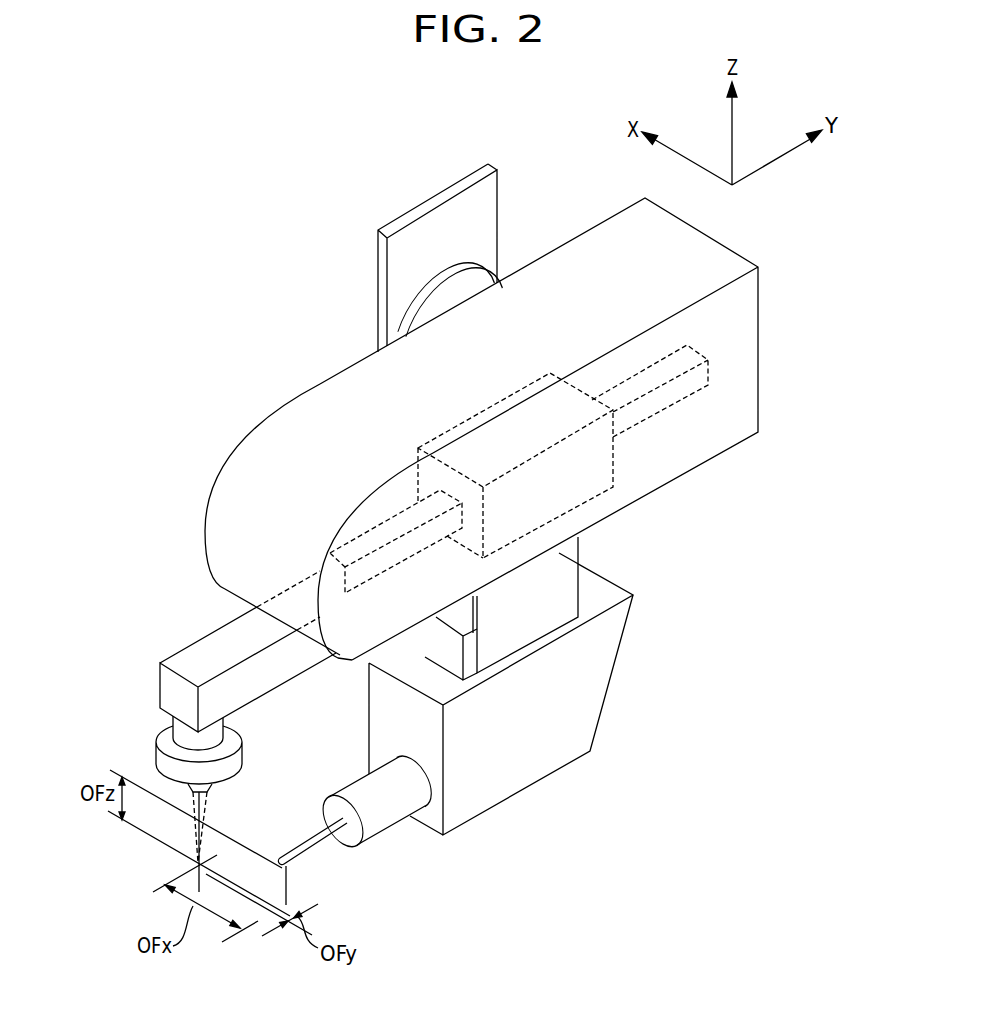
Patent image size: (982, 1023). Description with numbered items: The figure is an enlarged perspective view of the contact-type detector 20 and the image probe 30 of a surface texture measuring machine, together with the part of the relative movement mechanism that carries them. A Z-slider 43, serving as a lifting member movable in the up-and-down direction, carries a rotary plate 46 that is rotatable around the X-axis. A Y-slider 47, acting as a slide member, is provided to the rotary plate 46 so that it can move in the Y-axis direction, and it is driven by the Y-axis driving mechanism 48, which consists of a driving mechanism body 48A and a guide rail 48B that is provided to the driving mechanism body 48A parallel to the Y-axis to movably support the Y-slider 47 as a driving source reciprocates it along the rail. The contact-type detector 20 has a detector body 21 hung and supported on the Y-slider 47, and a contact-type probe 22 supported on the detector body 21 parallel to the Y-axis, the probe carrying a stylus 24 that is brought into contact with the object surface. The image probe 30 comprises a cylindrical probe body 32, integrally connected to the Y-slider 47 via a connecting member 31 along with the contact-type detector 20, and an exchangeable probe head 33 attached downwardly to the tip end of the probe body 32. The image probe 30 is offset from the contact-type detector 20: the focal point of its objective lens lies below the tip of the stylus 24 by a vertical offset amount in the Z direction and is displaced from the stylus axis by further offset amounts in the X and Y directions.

The contact-type detector 20 is at (455, 751).
The detector body 21 is at (527, 778).
The contact-type probe 22 is at (388, 828).
The stylus 24 is at (288, 862).
The image probe 30 is at (210, 708).
The connecting member 31 is at (470, 652).
The probe body 32 is at (243, 623).
The probe head 33 is at (165, 735).
The Z-slider 43 is at (382, 260).
The rotary plate 46 is at (408, 312).
The Y-slider 47 is at (535, 535).
The Y-axis driving mechanism 48 is at (536, 429).
The driving mechanism body 48A is at (727, 343).
The guide rail 48B is at (708, 367).